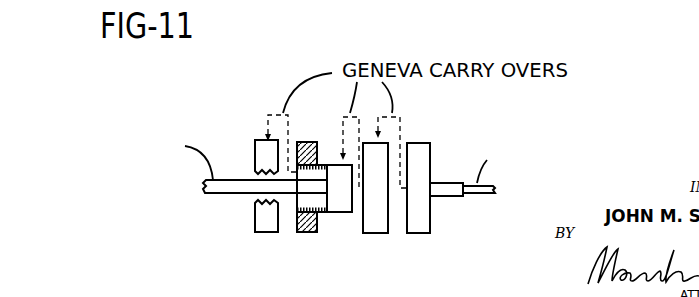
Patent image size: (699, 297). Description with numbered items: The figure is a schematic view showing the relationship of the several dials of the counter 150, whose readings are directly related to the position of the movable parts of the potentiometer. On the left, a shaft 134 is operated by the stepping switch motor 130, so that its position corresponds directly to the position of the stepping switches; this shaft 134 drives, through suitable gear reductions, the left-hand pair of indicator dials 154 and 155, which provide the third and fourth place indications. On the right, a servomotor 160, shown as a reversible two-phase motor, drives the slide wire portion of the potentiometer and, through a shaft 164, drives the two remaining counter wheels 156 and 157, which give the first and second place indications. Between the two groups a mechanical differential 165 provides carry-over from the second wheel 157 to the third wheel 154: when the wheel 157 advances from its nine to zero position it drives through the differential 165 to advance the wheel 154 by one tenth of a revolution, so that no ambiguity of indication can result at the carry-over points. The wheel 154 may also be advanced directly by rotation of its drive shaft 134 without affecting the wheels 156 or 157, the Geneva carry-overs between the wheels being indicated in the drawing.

The stepping switch motor 130 is at (129, 142).
The shaft 134 is at (220, 194).
The counter 150 is at (428, 185).
The dial 154 is at (308, 232).
The dial 155 is at (263, 232).
The counter wheel 156 is at (418, 233).
The counter wheel 157 is at (375, 233).
The servomotor 160 is at (588, 160).
The shaft 164 is at (452, 196).
The mechanical differential 165 is at (340, 212).